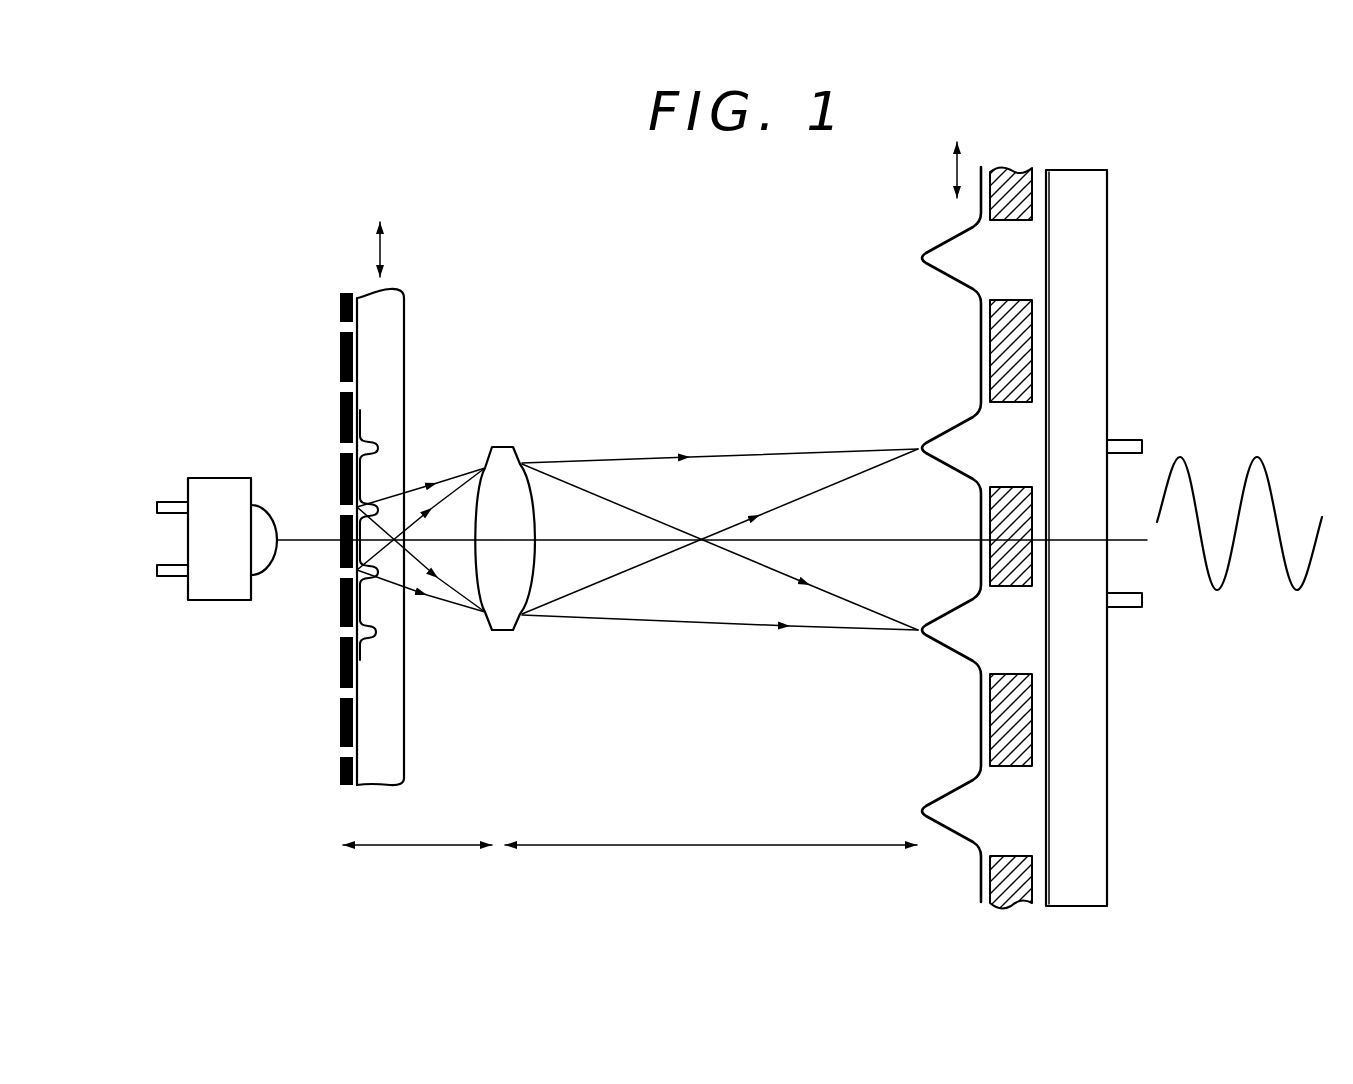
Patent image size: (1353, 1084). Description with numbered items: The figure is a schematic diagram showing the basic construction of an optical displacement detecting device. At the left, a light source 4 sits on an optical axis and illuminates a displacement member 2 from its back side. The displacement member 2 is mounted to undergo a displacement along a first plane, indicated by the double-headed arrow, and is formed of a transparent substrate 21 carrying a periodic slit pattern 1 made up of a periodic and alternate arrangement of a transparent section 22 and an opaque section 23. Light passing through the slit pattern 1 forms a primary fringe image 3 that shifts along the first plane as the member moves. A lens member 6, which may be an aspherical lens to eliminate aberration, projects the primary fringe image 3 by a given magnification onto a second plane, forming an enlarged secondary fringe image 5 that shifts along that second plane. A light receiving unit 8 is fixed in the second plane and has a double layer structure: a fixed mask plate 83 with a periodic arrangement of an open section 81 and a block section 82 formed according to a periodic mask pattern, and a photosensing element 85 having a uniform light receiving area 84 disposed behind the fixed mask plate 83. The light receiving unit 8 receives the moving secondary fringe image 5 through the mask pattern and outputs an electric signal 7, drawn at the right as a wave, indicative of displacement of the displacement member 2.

The periodic slit pattern 1 is at (330, 365).
The displacement member 2 is at (398, 273).
The transparent substrate 21 is at (390, 328).
The transparent section 22 is at (357, 388).
The opaque section 23 is at (360, 417).
The primary fringe image 3 is at (360, 587).
The light source 4 is at (203, 600).
The secondary fringe image 5 is at (940, 792).
The lens member 6 is at (527, 513).
The electric signal 7 is at (1217, 592).
The light receiving unit 8 is at (1108, 150).
The open section 81 is at (983, 627).
The block section 82 is at (987, 712).
The fixed mask plate 83 is at (987, 887).
The uniform light receiving area 84 is at (1047, 660).
The photosensing element 85 is at (1088, 834).